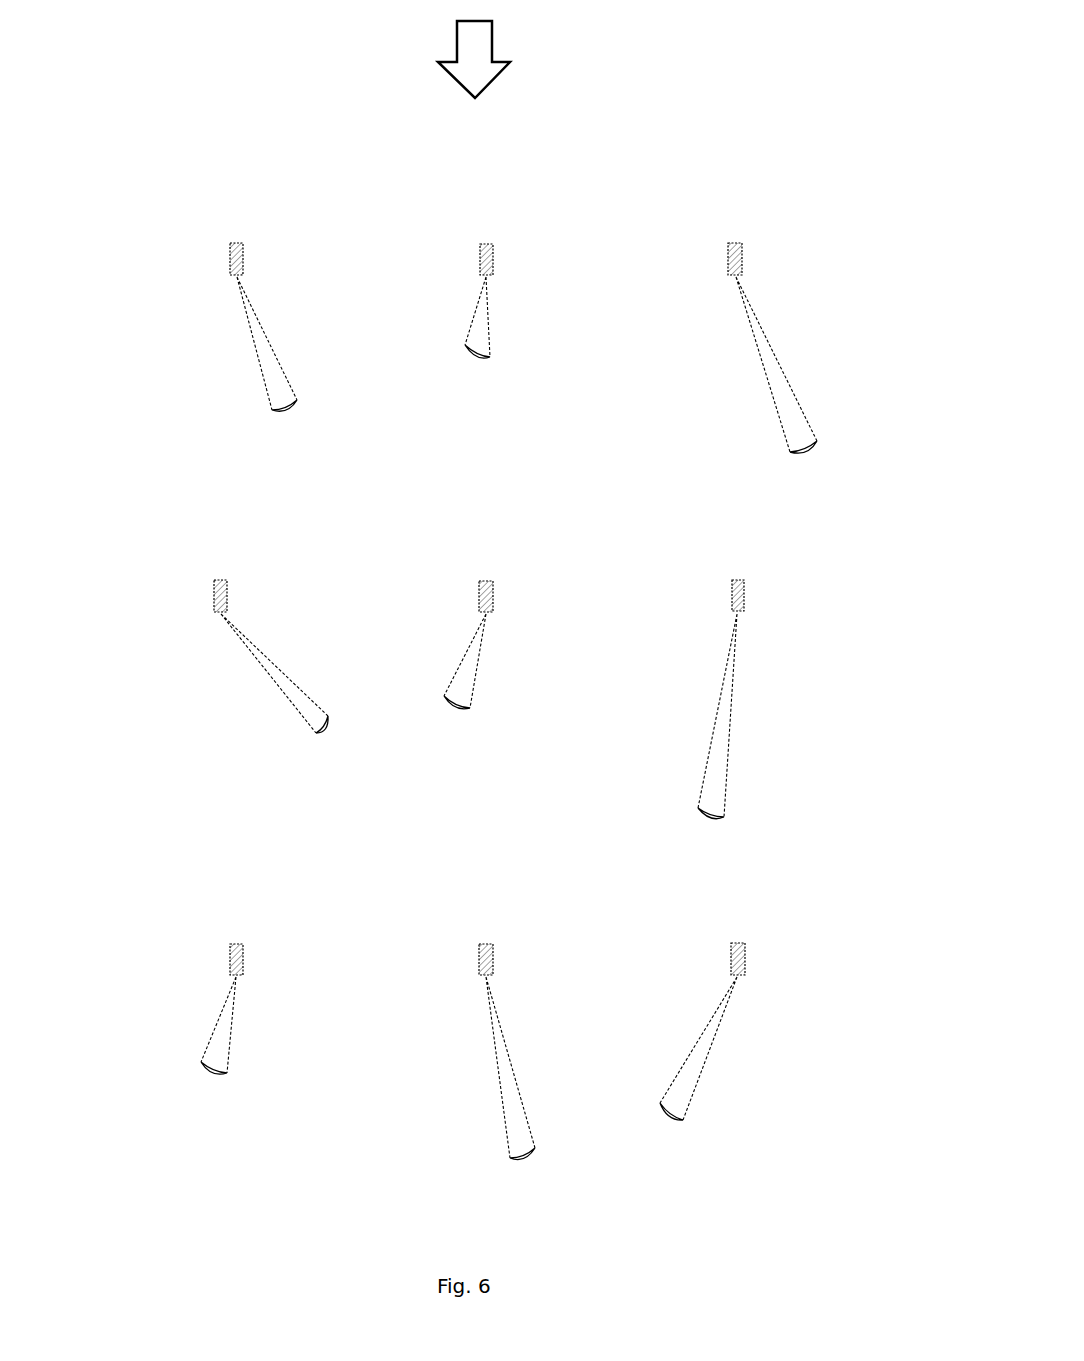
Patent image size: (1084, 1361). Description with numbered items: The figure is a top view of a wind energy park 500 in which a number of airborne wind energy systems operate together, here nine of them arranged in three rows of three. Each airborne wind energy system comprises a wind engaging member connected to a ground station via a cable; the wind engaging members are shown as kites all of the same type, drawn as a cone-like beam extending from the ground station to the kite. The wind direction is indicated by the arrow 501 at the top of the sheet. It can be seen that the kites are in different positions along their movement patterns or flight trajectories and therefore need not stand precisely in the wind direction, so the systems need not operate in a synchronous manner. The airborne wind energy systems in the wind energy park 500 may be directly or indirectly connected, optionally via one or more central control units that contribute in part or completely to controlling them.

The wind energy park 500 is at (797, 543).
The arrow 501 is at (480, 57).